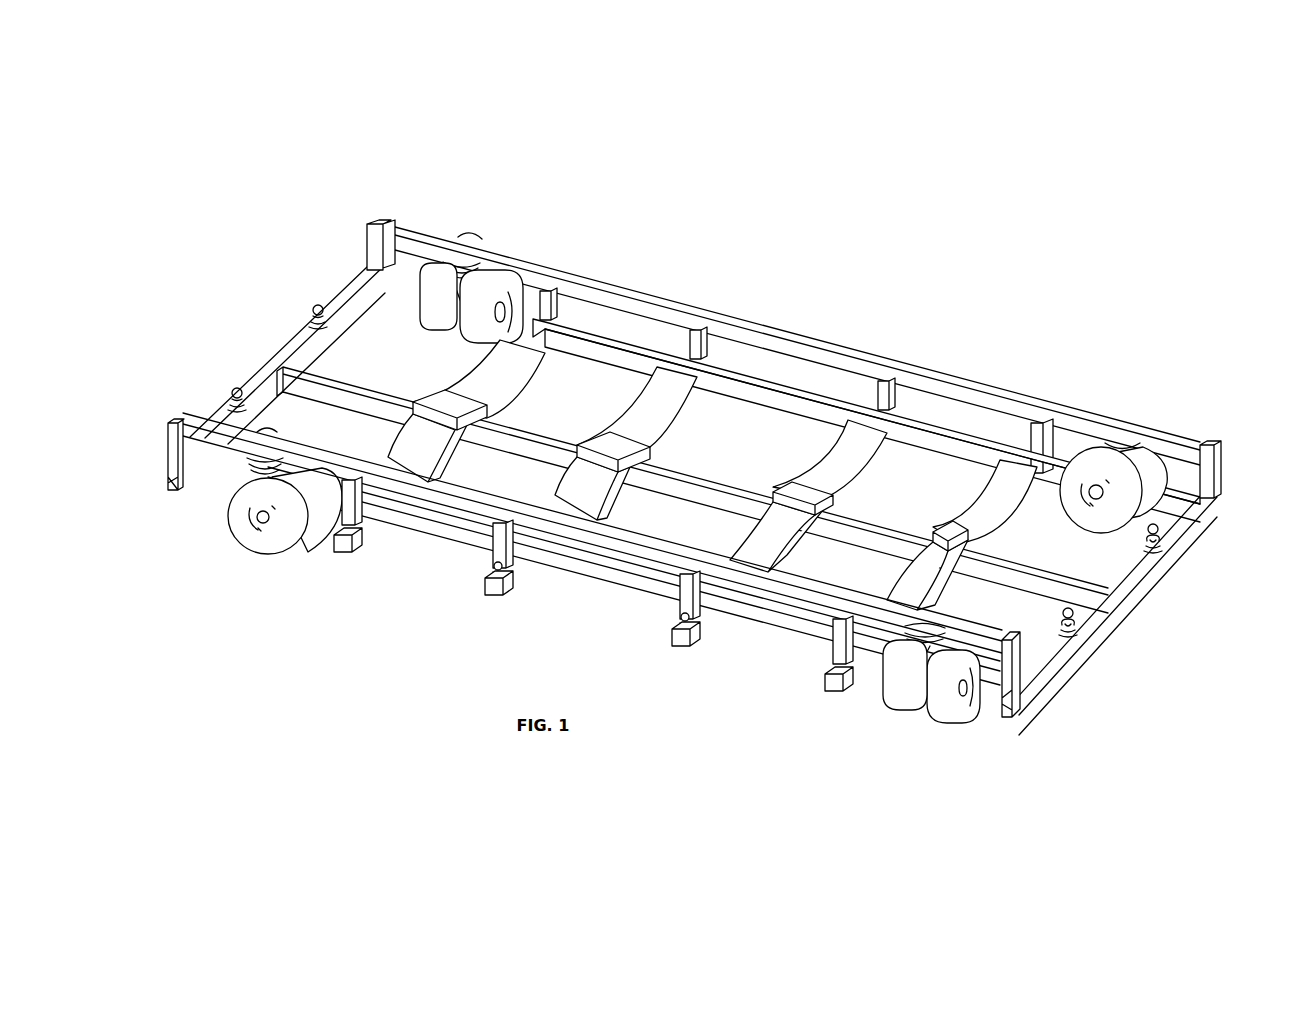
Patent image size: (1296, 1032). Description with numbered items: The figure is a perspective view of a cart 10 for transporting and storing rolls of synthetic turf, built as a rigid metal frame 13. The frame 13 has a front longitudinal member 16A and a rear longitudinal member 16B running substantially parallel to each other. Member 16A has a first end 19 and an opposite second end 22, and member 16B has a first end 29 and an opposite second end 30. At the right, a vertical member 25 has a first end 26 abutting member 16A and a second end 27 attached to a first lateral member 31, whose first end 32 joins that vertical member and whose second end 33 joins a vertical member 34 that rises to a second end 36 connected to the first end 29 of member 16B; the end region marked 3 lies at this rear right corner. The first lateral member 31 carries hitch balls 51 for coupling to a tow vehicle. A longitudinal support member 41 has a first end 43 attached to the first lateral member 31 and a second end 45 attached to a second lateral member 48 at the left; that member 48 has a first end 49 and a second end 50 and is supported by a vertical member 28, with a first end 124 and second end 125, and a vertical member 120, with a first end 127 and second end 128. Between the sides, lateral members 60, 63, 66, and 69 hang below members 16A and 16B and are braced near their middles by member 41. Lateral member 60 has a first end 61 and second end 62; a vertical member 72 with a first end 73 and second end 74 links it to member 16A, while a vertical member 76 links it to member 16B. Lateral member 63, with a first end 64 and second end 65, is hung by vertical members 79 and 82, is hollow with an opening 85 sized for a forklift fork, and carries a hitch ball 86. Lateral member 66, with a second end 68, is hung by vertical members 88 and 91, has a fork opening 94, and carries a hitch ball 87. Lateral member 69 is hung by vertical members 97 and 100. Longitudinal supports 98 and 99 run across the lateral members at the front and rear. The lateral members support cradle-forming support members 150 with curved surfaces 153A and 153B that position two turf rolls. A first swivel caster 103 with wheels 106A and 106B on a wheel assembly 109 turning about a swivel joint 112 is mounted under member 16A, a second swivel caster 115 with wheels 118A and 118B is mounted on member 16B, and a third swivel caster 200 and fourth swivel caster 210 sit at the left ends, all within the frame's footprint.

The cart 10 is at (1254, 357).
The frame 13 is at (805, 304).
The longitudinal member 16A is at (605, 530).
The longitudinal member 16B is at (735, 318).
The first end 19 is at (1033, 721).
The second end 22 is at (125, 429).
The vertical member 25 is at (644, 577).
The first end 26 is at (663, 577).
The second end 27 is at (1040, 706).
The vertical member 28 is at (170, 440).
The first end 29 is at (805, 304).
The rail end 3 is at (1248, 443).
The second end 30 is at (794, 304).
The first lateral member 31 is at (1115, 603).
The first end 32 is at (1010, 715).
The second end 33 is at (1148, 614).
The vertical member 34 is at (1248, 443).
The second end 36 is at (1220, 450).
The longitudinal support member 41 is at (692, 476).
The first end 43 is at (692, 476).
The second end 45 is at (322, 373).
The second lateral member 48 is at (305, 332).
The first end 49 is at (135, 479).
The second end 50 is at (796, 332).
The hitch balls 51 is at (1157, 545).
The lateral member 60 is at (905, 648).
The first end 61 is at (804, 679).
The second end 62 is at (1061, 403).
The lateral member 63 is at (776, 679).
The first end 64 is at (776, 679).
The second end 65 is at (866, 415).
The lateral member 66 is at (510, 585).
The second end 68 is at (866, 405).
The lateral member 69 is at (347, 510).
The vertical member 72 is at (837, 638).
The first end 73 is at (804, 660).
The second end 74 is at (592, 533).
The vertical member 76 is at (1037, 432).
The vertical member 79 is at (683, 597).
The vertical member 82 is at (885, 385).
The opening 85 is at (655, 650).
The hitch ball 86 is at (655, 632).
The hitch ball 87 is at (453, 592).
The vertical member 88 is at (455, 592).
The vertical member 91 is at (694, 333).
The opening 94 is at (453, 595).
The vertical member 97 is at (245, 511).
The longitudinal support 98 is at (615, 583).
The longitudinal support 99 is at (775, 397).
The vertical member 100 is at (555, 293).
The first swivel caster 103 is at (891, 729).
The wheel 106A is at (890, 718).
The wheel 106B is at (891, 718).
The wheel assembly 109 is at (890, 718).
The swivel joint 112 is at (900, 690).
The second swivel caster 115 is at (1170, 442).
The wheel 118A is at (1170, 442).
The wheel 118B is at (1152, 468).
The vertical member 120 is at (313, 197).
The first end 124 is at (119, 447).
The second end 125 is at (119, 479).
The first end 127 is at (372, 218).
The second end 128 is at (313, 197).
The support members 150 is at (445, 400).
The curved surface 153A is at (413, 455).
The curved surface 153B is at (500, 360).
The third swivel caster 200 is at (241, 486).
The fourth swivel caster 210 is at (482, 238).